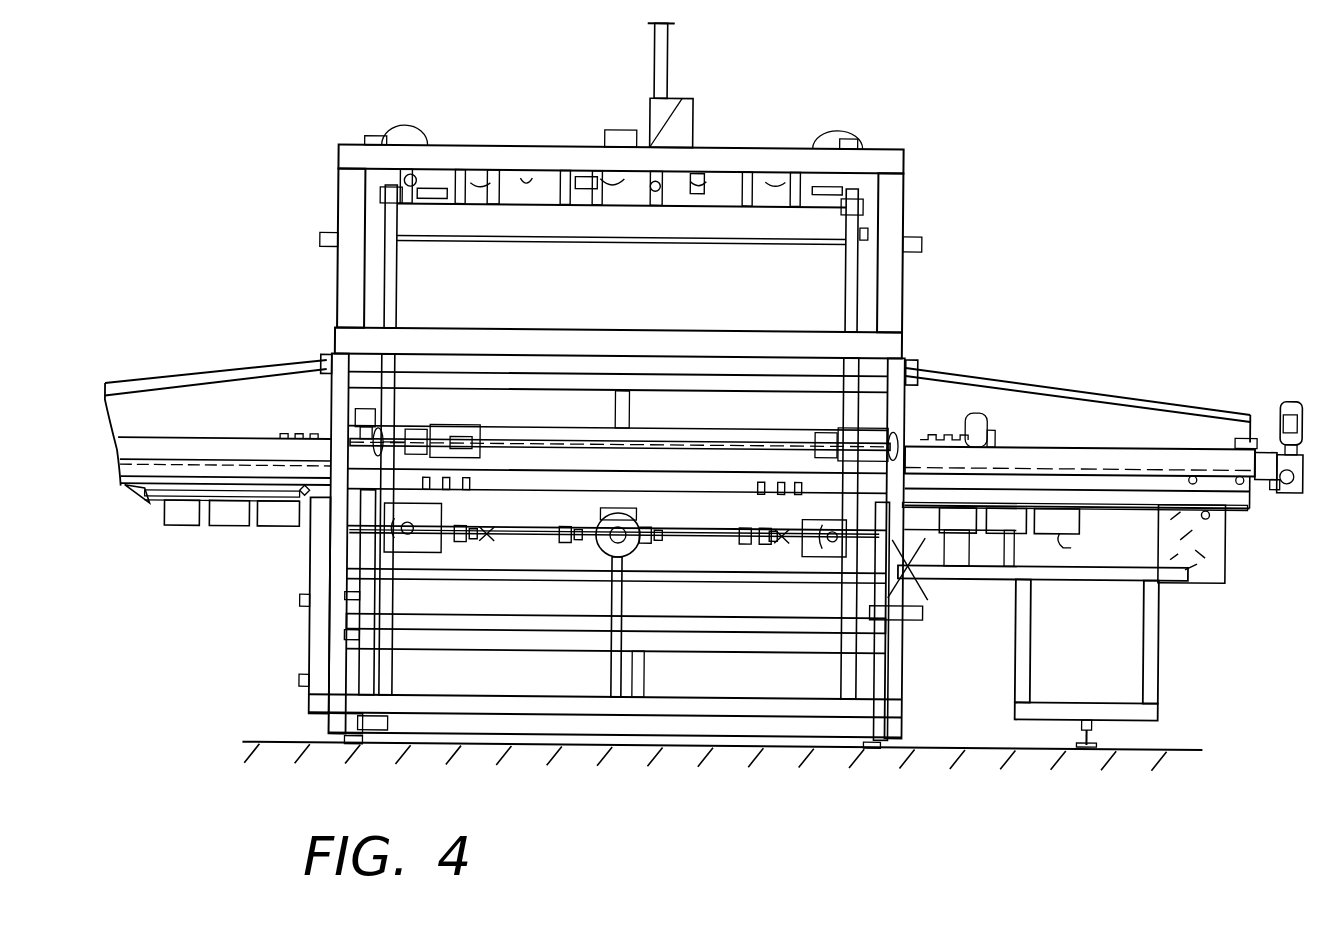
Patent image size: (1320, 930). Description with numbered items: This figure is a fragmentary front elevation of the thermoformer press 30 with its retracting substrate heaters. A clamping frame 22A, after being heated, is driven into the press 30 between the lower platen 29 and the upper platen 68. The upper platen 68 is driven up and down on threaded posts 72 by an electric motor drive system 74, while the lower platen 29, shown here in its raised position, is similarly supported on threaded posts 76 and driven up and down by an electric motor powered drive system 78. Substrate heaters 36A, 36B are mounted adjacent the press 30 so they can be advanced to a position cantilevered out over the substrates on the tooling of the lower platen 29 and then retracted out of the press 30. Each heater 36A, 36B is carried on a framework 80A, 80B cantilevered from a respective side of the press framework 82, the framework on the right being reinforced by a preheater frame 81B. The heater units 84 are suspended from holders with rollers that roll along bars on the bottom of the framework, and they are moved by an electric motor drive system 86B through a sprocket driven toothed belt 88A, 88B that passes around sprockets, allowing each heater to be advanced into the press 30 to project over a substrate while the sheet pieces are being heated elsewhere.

The thermoformer press 30 is at (938, 195).
The clamping frame 22A is at (649, 446).
The lower platen 29 is at (525, 487).
The substrate heater 36A is at (183, 539).
The substrate heater 36B is at (995, 543).
The upper platen 68 is at (711, 216).
The threaded posts 72 is at (396, 291).
The electric motor drive system 74 is at (572, 160).
The threaded posts 76 is at (392, 598).
The electric motor powered drive system 78 is at (604, 548).
The framework 80A is at (137, 386).
The framework 80B is at (1124, 388).
The preheater frame 81B is at (1167, 650).
The press framework 82 is at (324, 355).
The heater units 84 is at (191, 514).
The electric motor drive system 86B is at (1277, 397).
The sprocket driven toothed belt 88A is at (143, 494).
The sprocket driven toothed belt 88B is at (1050, 455).